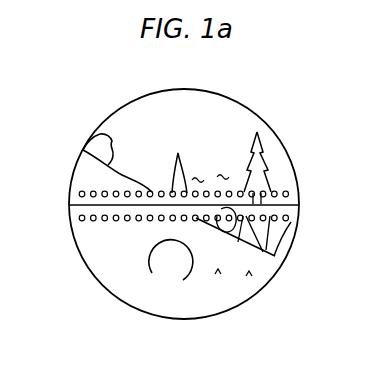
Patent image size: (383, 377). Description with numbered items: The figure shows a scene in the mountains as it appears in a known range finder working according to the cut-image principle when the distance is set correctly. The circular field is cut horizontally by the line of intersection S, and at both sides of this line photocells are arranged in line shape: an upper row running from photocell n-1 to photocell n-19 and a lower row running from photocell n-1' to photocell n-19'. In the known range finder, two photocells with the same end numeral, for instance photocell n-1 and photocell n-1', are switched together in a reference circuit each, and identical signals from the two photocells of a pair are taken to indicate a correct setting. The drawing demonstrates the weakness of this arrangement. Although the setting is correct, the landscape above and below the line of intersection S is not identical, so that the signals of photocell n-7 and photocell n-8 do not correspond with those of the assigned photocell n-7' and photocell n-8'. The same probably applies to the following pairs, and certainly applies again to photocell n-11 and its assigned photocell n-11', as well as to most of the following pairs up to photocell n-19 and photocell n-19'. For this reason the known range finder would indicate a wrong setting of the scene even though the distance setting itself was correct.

The photocell n-1 is at (57, 188).
The photocell n-1' is at (57, 225).
The photocell n-7 is at (116, 145).
The photocell n-7' is at (114, 268).
The photocell n-8 is at (141, 134).
The photocell n-8' is at (137, 277).
The photocell n-11 is at (226, 134).
The photocell n-11' is at (229, 277).
The photocell n-19 is at (313, 178).
The photocell n-19' is at (315, 228).
The line of intersection S is at (290, 203).